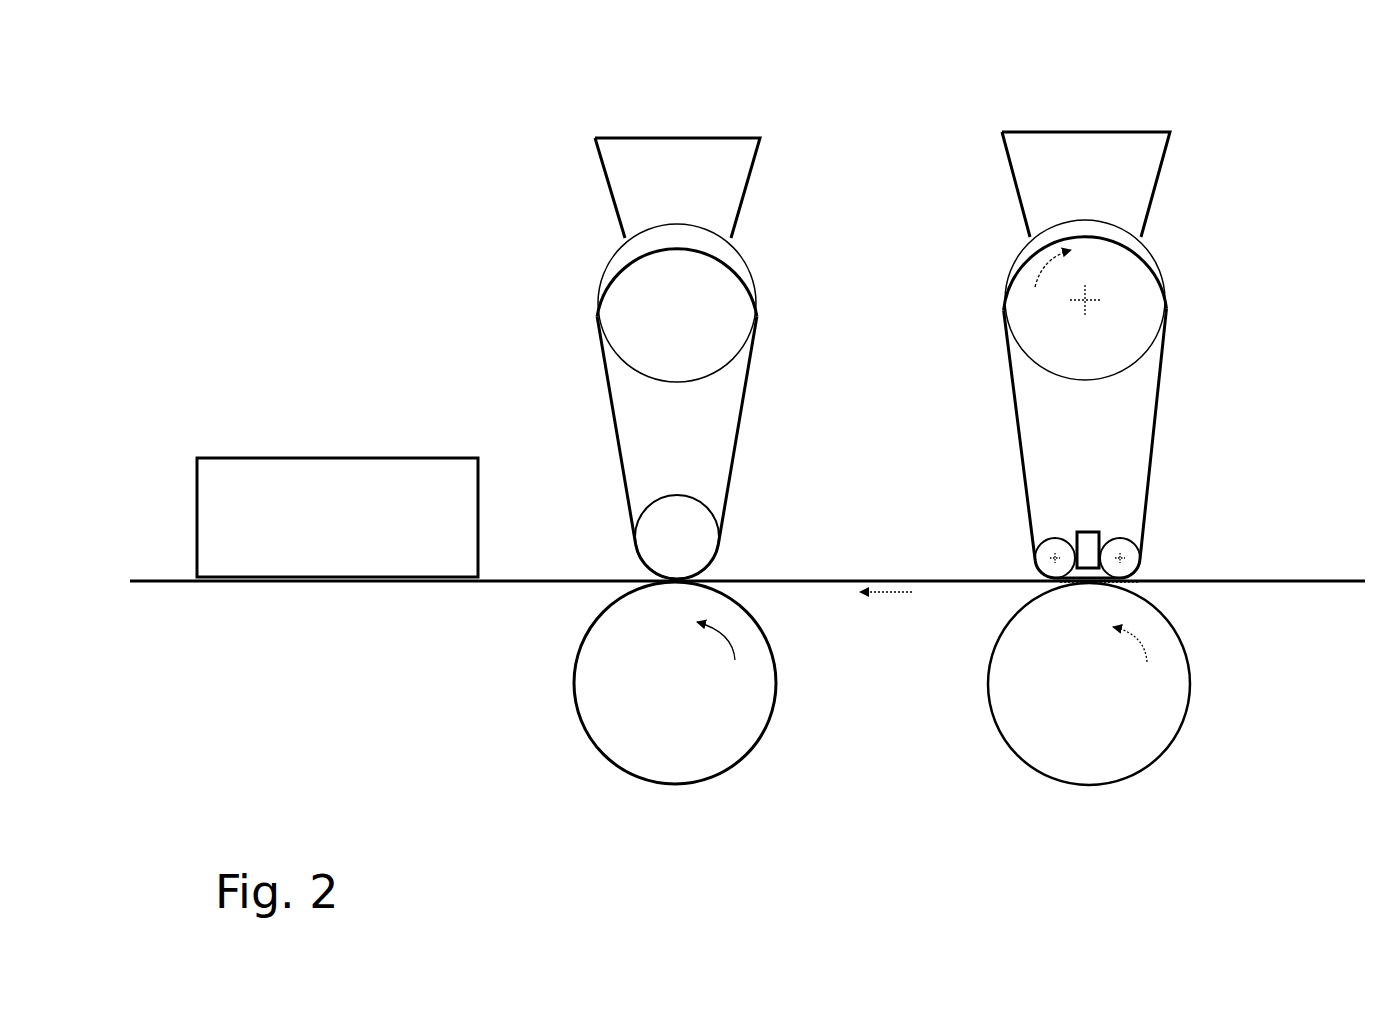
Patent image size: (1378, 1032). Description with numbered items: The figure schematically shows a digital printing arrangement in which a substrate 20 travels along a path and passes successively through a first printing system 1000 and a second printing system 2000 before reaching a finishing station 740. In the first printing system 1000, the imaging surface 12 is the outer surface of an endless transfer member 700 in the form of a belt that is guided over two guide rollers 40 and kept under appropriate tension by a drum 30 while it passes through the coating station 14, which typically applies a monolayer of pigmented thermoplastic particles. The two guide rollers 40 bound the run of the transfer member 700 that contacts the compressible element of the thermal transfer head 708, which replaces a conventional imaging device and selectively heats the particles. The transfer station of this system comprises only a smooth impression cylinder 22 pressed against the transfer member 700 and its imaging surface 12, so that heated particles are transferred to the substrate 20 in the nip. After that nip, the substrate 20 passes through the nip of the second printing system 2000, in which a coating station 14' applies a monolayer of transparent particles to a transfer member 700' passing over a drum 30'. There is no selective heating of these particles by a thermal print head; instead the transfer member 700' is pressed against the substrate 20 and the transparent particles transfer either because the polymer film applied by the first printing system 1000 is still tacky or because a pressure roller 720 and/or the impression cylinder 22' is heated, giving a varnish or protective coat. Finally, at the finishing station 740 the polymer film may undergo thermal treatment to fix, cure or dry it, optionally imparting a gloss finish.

The second printing system 2000 is at (671, 422).
The first printing system 1000 is at (1121, 405).
The coating station 14' is at (677, 188).
The coating station 14 is at (1086, 184).
The drum 30' is at (705, 303).
The drum 30 is at (1122, 300).
The transfer member 700' is at (706, 414).
The transfer member 700 is at (1133, 407).
The imaging surface 12 is at (1133, 407).
The pressure roller 720 is at (690, 544).
The finishing station 740 is at (387, 476).
The guide rollers 40 is at (1041, 549).
The thermal transfer head 708 is at (1160, 580).
The substrate 20 is at (1268, 579).
The impression cylinder 22 is at (1126, 684).
The impression cylinder 22' is at (704, 683).